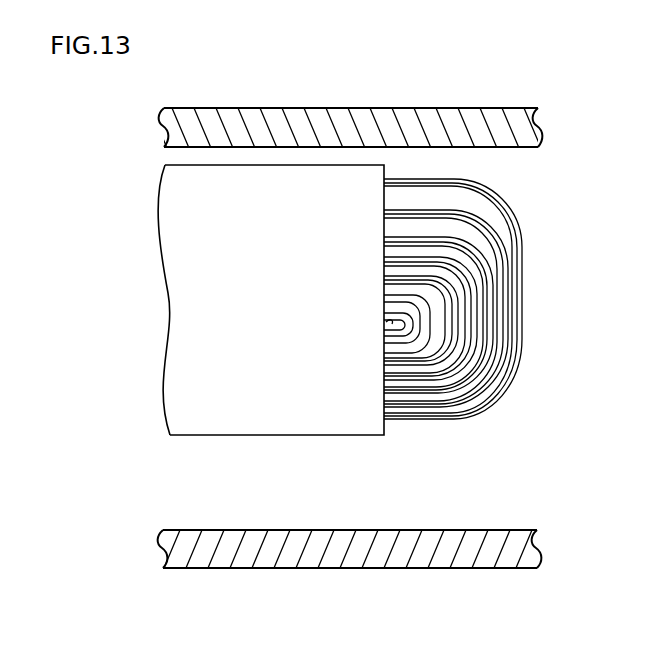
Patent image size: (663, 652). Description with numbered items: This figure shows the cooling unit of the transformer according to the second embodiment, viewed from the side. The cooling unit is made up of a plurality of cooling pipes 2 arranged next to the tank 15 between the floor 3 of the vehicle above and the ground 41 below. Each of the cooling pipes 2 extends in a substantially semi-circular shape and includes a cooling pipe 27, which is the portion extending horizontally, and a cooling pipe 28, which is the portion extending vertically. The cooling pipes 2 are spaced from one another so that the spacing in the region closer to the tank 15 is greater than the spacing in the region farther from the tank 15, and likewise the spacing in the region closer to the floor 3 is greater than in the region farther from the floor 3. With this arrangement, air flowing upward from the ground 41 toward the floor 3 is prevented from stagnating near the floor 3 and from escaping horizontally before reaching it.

The floor 3 is at (270, 127).
The cooling pipe 27 is at (482, 239).
The cooling pipe 28 is at (482, 299).
The cooling pipes 2 is at (398, 336).
The tank 15 is at (192, 305).
The ground 41 is at (281, 552).